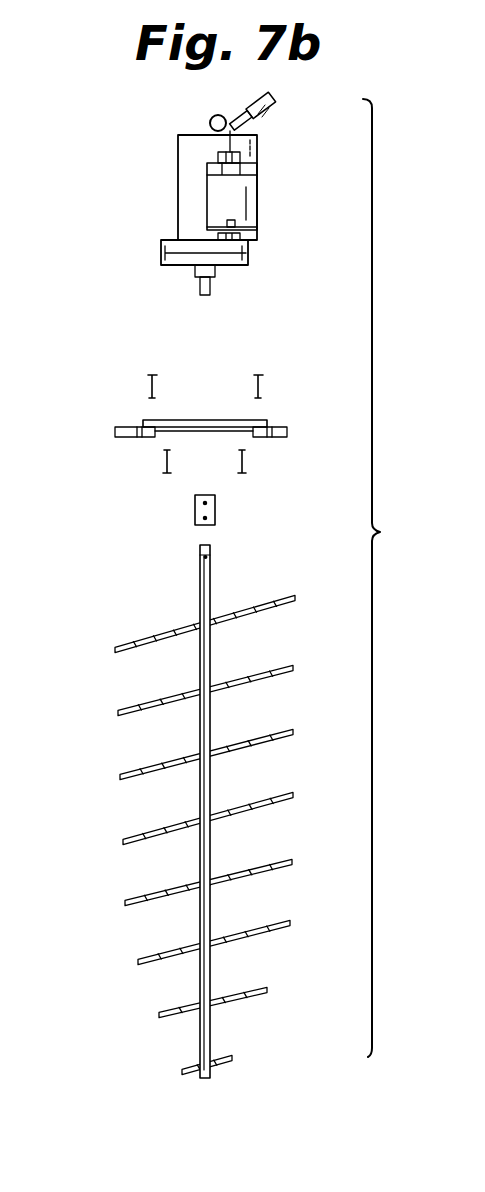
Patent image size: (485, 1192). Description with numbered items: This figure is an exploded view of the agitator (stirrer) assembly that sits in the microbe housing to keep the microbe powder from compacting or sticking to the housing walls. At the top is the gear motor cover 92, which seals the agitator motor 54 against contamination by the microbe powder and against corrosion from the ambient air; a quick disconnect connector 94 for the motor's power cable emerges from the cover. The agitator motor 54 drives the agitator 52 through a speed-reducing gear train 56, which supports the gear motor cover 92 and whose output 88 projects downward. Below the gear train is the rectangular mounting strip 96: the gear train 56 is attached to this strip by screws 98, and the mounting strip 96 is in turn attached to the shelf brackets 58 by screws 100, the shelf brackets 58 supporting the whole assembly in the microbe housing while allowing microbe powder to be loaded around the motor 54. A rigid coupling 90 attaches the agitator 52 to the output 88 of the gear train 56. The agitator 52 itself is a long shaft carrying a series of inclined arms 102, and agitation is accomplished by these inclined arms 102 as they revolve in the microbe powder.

The agitator 52 is at (196, 658).
The agitator motor 54 is at (205, 205).
The speed-reducing gear train 56 is at (158, 255).
The shelf brackets 58 is at (112, 433).
The output of gear train 88 is at (216, 284).
The rigid coupling 90 is at (192, 518).
The gear motor cover 92 is at (177, 146).
The quick disconnect connector 94 is at (280, 106).
The rectangular mounting strip 96 is at (141, 418).
The screws 98 is at (164, 460).
The screws 100 is at (157, 388).
The inclined arms 102 is at (283, 672).